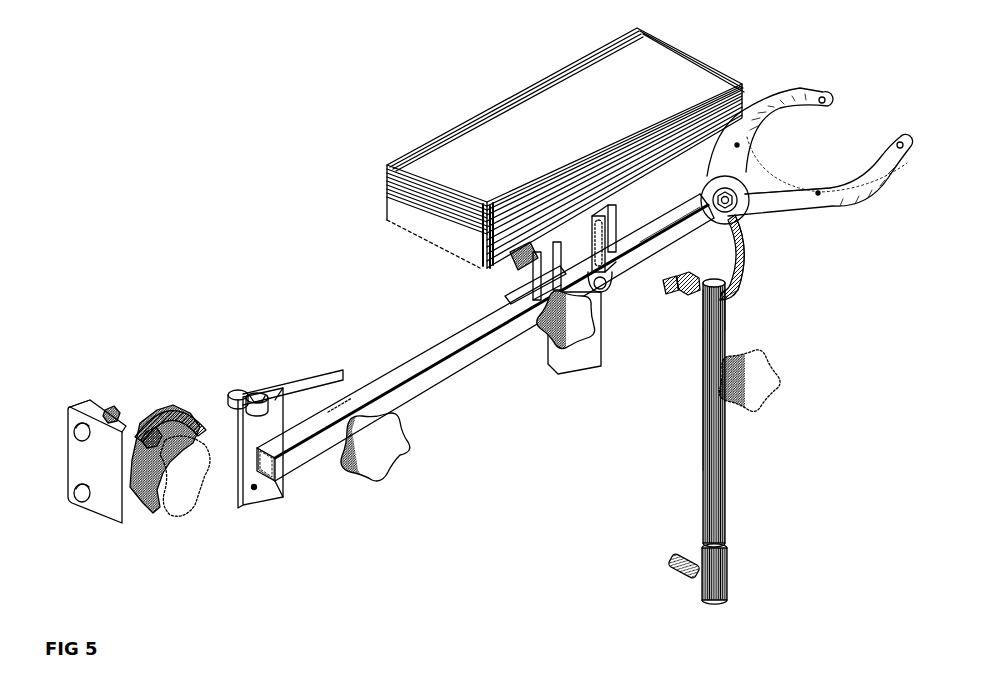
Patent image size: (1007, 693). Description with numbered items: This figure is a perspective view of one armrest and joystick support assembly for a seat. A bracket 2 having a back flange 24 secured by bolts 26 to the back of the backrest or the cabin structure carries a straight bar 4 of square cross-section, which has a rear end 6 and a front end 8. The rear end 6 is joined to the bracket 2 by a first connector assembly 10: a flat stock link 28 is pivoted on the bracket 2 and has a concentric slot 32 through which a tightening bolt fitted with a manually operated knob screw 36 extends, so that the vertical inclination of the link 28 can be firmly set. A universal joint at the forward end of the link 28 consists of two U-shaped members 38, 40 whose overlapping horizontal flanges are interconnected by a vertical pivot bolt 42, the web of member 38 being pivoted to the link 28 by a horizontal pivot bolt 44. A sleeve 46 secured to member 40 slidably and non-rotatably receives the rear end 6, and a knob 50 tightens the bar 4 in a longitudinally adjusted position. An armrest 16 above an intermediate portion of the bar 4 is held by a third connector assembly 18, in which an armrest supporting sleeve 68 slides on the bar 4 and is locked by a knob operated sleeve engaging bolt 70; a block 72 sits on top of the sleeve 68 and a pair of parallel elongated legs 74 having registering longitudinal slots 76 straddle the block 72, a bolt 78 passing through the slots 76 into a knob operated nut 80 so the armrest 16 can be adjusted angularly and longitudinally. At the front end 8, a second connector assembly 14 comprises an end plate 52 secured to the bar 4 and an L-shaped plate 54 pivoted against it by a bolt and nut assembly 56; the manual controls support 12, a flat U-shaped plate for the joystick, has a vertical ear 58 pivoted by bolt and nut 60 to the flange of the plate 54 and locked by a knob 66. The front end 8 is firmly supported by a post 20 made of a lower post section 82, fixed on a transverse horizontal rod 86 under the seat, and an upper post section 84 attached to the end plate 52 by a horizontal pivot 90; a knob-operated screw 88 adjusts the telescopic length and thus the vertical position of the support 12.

The bracket 2 is at (120, 523).
The straight bar 4 is at (440, 374).
The rear end 6 is at (285, 466).
The front end 8 is at (655, 228).
The first connector assembly 10 is at (210, 492).
The manual controls support 12 is at (903, 165).
The second connector assembly 14 is at (745, 263).
The armrest 16 is at (455, 150).
The third connector assembly 18 is at (580, 370).
The post 20 is at (728, 486).
The back flange 24 is at (86, 402).
The bolts 26 is at (111, 406).
The flat stock link 28 is at (193, 418).
The concentric slot 32 is at (151, 428).
The knob screw 36 is at (180, 503).
The U-shaped member 38 is at (230, 391).
The U-shaped member 40 is at (288, 405).
The vertical pivot bolt 42 is at (259, 393).
The horizontal pivot bolt 44 is at (240, 495).
The sleeve 46 is at (340, 406).
The knob 50 is at (368, 472).
The end plate 52 is at (730, 284).
The L-shaped plate 54 is at (748, 252).
The bolt and nut assembly 56 is at (676, 282).
The vertical ear 58 is at (731, 196).
The bolt and nut 60 is at (783, 180).
The knob 66 is at (712, 184).
The armrest supporting sleeve 68 is at (540, 307).
The knob operated sleeve engaging bolt 70 is at (566, 340).
The block 72 is at (513, 299).
The elongated legs 74 is at (614, 212).
The longitudinal slots 76 is at (612, 226).
The bolt 78 is at (606, 285).
The knob operated nut 80 is at (518, 264).
The lower post section 82 is at (702, 450).
The upper post section 84 is at (703, 330).
The transverse horizontal rod 86 is at (673, 576).
The knob-operated screw 88 is at (765, 383).
The horizontal pivot 90 is at (672, 290).